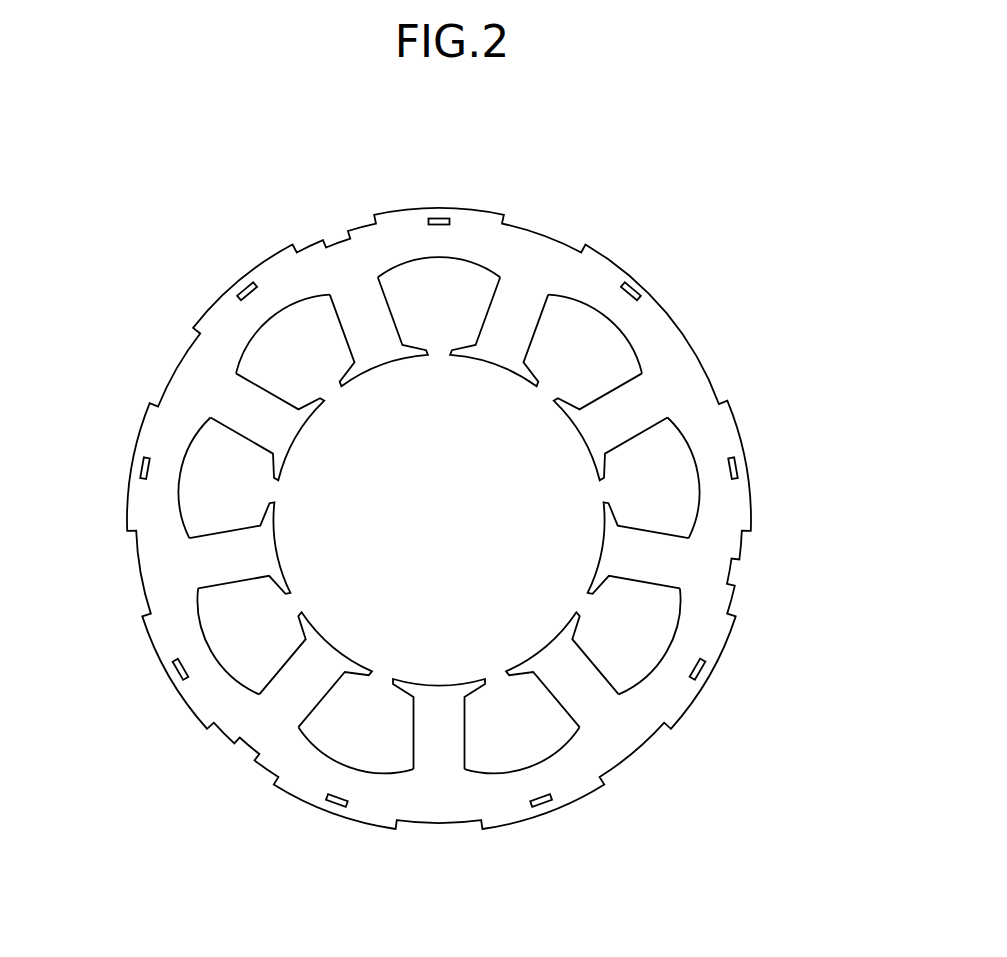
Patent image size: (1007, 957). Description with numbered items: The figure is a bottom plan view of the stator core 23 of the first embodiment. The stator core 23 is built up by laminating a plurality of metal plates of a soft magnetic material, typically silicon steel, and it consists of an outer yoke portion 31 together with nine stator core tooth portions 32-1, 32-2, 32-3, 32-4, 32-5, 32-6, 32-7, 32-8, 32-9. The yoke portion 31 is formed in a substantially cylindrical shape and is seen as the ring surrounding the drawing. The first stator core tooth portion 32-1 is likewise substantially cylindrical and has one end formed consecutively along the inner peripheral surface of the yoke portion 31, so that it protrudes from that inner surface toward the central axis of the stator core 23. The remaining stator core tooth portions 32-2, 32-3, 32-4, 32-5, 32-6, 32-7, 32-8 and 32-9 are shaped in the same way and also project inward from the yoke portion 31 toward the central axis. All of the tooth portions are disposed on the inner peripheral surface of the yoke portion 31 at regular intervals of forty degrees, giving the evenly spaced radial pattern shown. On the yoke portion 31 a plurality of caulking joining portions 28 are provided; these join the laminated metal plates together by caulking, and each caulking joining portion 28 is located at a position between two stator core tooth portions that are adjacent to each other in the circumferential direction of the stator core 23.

The stator core 23 is at (698, 144).
The caulking joining portion 28 is at (240, 277).
The yoke portion 31 is at (600, 272).
The first stator core tooth portion 32-1 is at (502, 316).
The stator core tooth portion 32-2 is at (615, 403).
The stator core tooth portion 32-3 is at (646, 542).
The stator core tooth portion 32-4 is at (595, 670).
The stator core tooth portion 32-5 is at (455, 735).
The stator core tooth portion 32-6 is at (283, 677).
The stator core tooth portion 32-7 is at (223, 542).
The stator core tooth portion 32-8 is at (255, 403).
The stator core tooth portion 32-9 is at (376, 313).